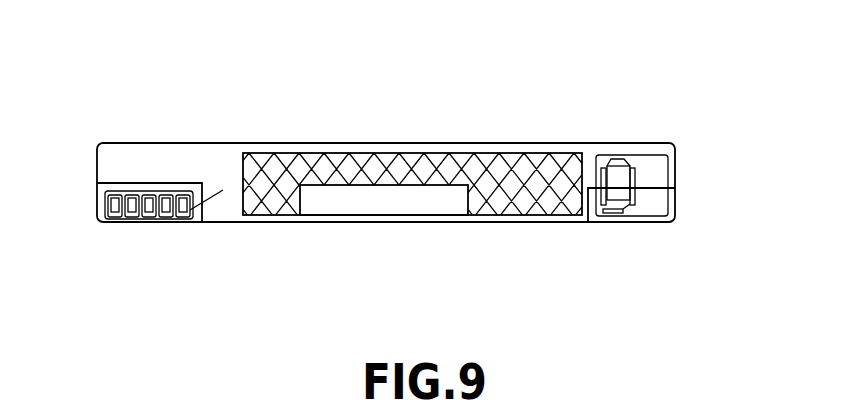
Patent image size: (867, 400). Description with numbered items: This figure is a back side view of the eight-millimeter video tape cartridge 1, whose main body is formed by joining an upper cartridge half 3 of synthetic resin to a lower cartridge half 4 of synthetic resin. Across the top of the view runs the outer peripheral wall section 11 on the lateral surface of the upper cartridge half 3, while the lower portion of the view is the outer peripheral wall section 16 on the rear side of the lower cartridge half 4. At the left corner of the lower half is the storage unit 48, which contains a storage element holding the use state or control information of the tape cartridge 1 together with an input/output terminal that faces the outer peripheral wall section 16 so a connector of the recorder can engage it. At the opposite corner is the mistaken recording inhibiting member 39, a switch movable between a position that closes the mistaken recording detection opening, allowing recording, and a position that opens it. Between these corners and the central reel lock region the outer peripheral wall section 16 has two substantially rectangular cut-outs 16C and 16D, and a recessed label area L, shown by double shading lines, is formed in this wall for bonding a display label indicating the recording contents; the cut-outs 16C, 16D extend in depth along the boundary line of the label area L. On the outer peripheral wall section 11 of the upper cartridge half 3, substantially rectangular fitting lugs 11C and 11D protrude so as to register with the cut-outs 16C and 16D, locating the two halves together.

The tape cartridge 1 is at (708, 62).
The upper cartridge half 3 is at (657, 150).
The lower cartridge half 4 is at (672, 224).
The outer peripheral wall section 11 is at (112, 162).
The fitting lug 11C is at (184, 222).
The fitting lug 11D is at (496, 212).
The outer peripheral wall section 16 is at (105, 196).
The cut-out 16C is at (226, 211).
The cut-out 16D is at (552, 212).
The mistaken recording inhibiting member 39 is at (622, 181).
The storage unit 48 is at (108, 222).
The label area L is at (540, 163).